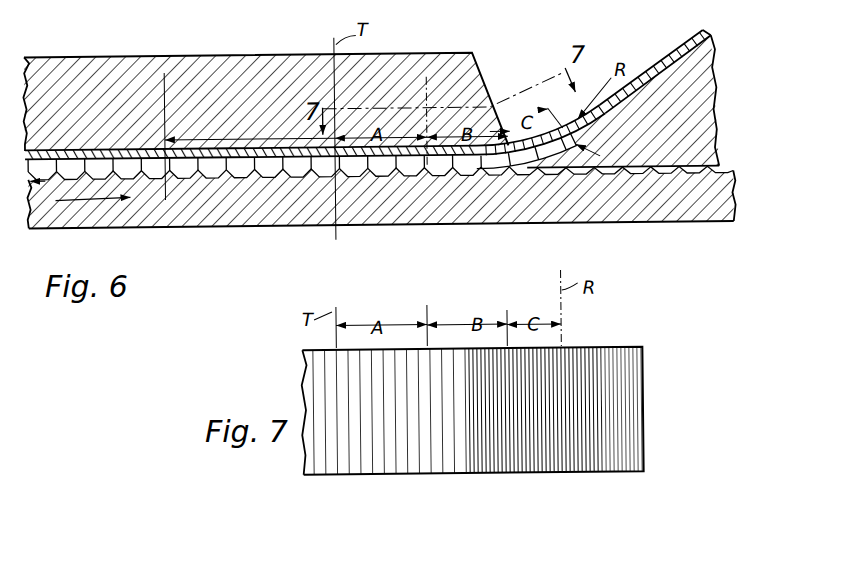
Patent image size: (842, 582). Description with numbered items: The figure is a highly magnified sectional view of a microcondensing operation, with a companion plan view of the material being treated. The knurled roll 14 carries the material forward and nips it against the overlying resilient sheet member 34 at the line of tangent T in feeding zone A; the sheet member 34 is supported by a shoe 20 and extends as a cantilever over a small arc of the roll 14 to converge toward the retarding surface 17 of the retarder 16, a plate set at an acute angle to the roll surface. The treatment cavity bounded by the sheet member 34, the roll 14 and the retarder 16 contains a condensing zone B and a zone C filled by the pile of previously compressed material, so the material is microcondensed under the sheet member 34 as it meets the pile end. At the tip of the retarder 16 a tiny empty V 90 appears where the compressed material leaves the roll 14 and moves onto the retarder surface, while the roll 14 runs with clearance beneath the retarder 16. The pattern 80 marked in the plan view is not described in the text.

In FIG. 6, the roll 14 is at (310, 216).
In FIG. 6, the retarder 16 is at (695, 136).
In FIG. 6, the retarding surface 17 is at (710, 50).
In FIG. 6, the shoe 20 is at (262, 60).
In FIG. 6, the resilient sheet member 34 is at (242, 151).
In FIG. 6, the segments 80 is at (62, 164).
In FIG. 7, the segments 80 is at (402, 465).
In FIG. 6, the empty V 90 is at (527, 169).